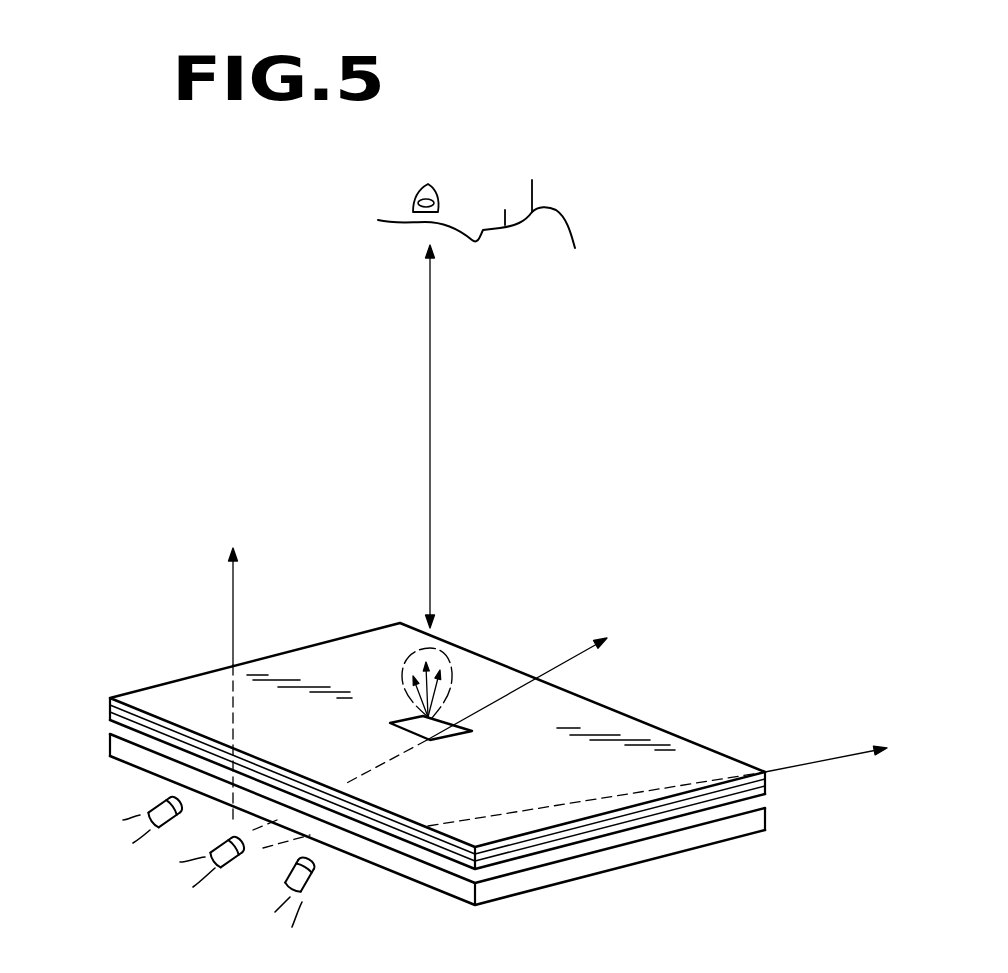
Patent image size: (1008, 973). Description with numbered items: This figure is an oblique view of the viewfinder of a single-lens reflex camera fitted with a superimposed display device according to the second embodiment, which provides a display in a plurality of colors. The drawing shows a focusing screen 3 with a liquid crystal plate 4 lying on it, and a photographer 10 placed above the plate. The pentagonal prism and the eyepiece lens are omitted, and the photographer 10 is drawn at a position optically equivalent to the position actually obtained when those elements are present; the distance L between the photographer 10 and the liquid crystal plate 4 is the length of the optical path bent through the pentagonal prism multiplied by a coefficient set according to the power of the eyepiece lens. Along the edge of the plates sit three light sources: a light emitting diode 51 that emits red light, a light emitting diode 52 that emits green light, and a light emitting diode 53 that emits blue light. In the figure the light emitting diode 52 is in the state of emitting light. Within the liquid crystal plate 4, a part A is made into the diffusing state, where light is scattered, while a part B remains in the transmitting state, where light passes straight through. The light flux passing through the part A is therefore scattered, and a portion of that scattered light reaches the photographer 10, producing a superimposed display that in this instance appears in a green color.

The focusing screen 3 is at (108, 748).
The liquid crystal plate 4 is at (108, 705).
The photographer 10 is at (484, 233).
The light emitting diode 51 is at (172, 828).
The light emitting diode 52 is at (237, 862).
The light emitting diode 53 is at (312, 880).
The distance L is at (439, 436).
The part in diffusing state A is at (486, 736).
The part in transmitting state B is at (736, 769).